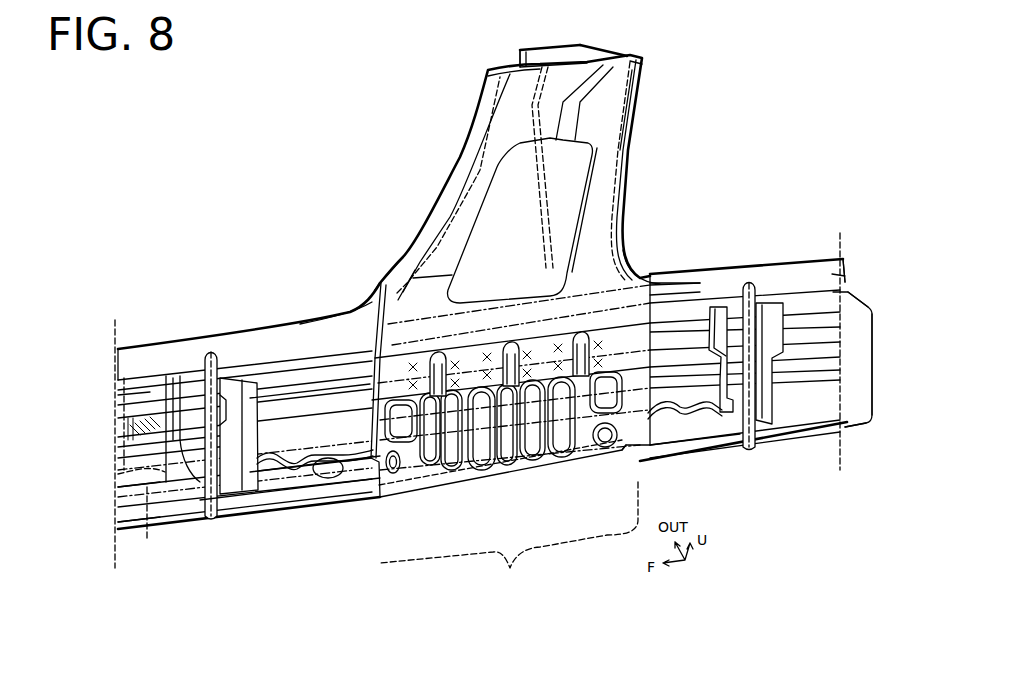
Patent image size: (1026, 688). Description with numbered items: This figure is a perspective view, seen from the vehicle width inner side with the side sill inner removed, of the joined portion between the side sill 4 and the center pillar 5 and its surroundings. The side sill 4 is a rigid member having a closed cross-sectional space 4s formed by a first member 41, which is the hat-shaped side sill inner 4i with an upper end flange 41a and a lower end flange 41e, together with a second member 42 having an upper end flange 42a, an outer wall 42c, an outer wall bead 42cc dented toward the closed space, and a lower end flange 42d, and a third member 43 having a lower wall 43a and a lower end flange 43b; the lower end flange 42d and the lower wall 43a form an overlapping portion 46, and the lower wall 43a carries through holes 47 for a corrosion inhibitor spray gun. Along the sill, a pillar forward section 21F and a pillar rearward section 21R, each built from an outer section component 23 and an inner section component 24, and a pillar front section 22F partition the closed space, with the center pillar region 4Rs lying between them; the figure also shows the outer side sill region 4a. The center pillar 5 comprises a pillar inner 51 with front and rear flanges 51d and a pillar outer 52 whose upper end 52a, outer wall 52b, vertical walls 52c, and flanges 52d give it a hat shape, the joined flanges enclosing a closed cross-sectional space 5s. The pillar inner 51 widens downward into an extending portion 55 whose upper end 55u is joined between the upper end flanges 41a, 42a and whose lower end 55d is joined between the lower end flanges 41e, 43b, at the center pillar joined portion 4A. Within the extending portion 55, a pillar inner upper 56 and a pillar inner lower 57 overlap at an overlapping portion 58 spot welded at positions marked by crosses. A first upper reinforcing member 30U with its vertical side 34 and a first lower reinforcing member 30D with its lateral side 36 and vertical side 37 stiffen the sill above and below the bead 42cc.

The center pillar 5 is at (447, 123).
The pillar inner 51 is at (643, 76).
The flange 51d is at (627, 125).
The pillar outer 52 is at (550, 45).
The upper end 52a is at (610, 46).
The outer wall 52b is at (535, 45).
The vertical wall 52c is at (517, 60).
The flange 52d is at (495, 67).
The closed cross-sectional space 5s is at (510, 230).
The pillar inner upper 56 is at (633, 268).
The extending portion 55 is at (683, 291).
The upper end 55u is at (670, 285).
The lower end 55d is at (628, 453).
The pillar inner lower 57 is at (547, 477).
The overlapping portion 58 is at (710, 335).
The center pillar joined portion 4A is at (372, 279).
The pillar front section 22F is at (353, 353).
The roof side rail outer 4a is at (713, 256).
The side sill 4 is at (751, 261).
The second member 42 is at (814, 252).
The upper end flange 42a is at (122, 360).
The outer wall bead 42cc is at (105, 423).
The outer wall 42c is at (117, 430).
The lower end flange 42d is at (118, 474).
The upper end flange 41a is at (857, 272).
The lower end flange 41e is at (840, 437).
The side sill inner 4i is at (879, 401).
The first member 41 is at (860, 420).
The closed cross-sectional space 4s is at (828, 347).
The third member 43 is at (692, 461).
The lower wall 43a is at (123, 497).
The lower end flange 43b is at (133, 519).
The vertical side 34 is at (150, 380).
The outer section component 23 is at (196, 360).
The inner section component 24 is at (243, 368).
The vertical side 37 is at (300, 400).
The lateral side 36 is at (312, 470).
The through hole 47 is at (328, 476).
The first upper reinforcing member 30U is at (123, 390).
The first lower reinforcing member 30D is at (275, 470).
The overlapping portion 46 is at (147, 487).
The pillar forward section 21F is at (233, 517).
The pillar rearward section 21R is at (781, 446).
The rail spot-weld region 4Rs is at (509, 542).